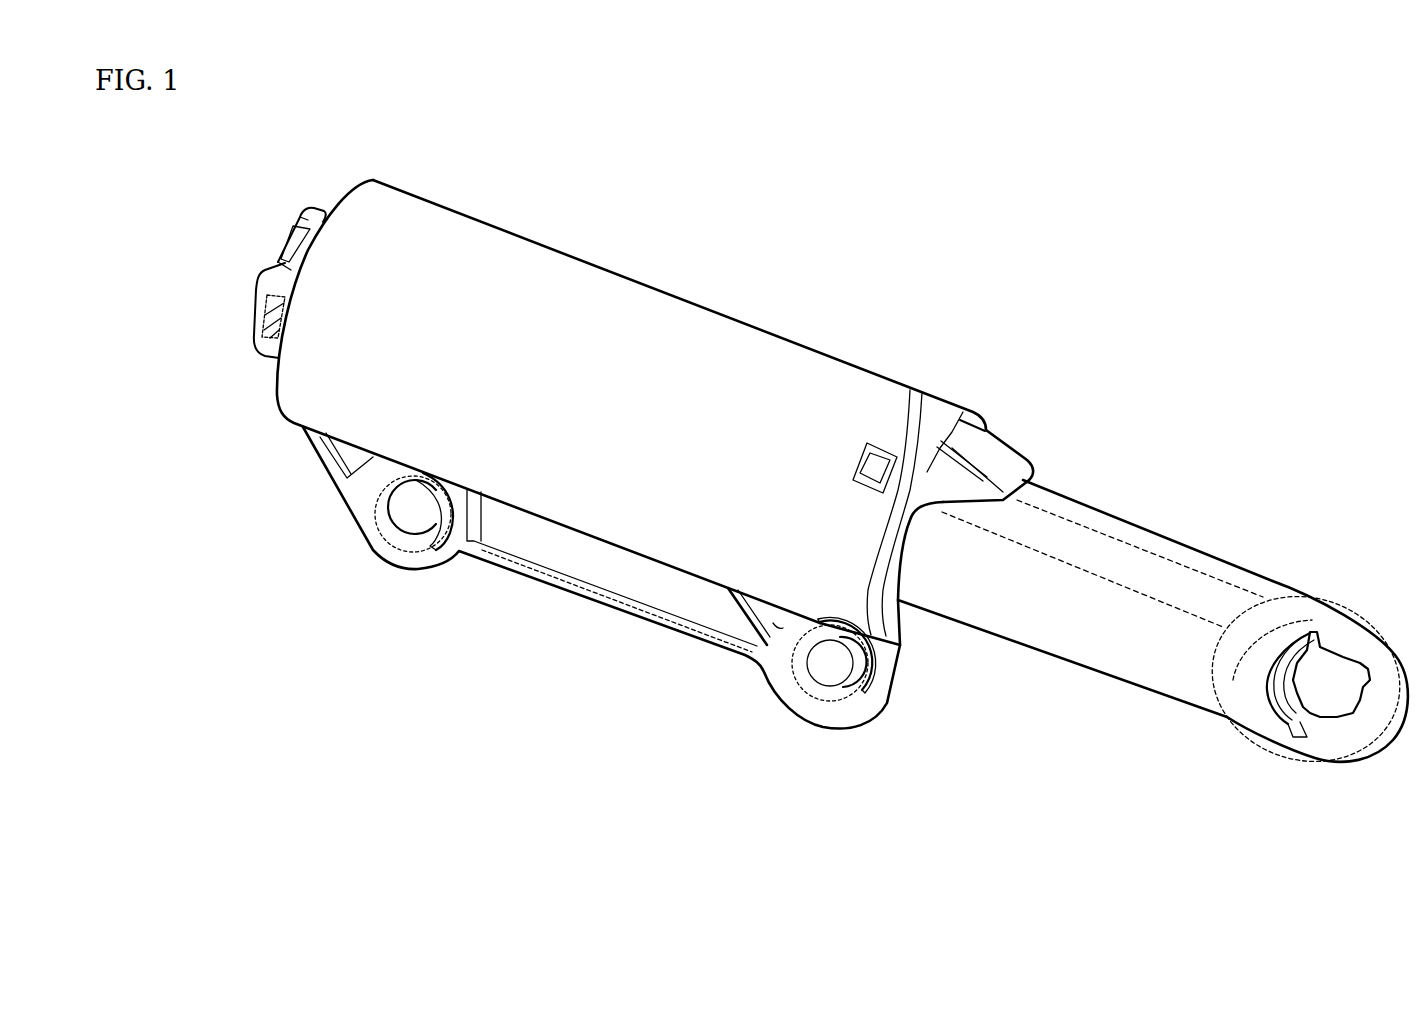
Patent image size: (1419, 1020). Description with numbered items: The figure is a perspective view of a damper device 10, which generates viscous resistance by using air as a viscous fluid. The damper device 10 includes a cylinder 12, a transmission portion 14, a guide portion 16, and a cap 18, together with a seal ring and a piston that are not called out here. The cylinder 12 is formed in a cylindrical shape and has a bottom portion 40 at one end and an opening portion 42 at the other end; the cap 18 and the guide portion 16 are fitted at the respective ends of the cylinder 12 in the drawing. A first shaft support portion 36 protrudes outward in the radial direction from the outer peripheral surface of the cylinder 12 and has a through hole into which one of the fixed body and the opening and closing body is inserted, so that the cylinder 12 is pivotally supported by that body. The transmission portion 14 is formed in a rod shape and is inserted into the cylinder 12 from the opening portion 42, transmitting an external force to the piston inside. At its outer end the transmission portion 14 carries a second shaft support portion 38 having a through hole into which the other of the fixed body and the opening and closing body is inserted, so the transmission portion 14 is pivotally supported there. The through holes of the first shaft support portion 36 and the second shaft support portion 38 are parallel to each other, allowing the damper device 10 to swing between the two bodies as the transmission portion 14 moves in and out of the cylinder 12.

The damper device 10 is at (668, 757).
The cylinder 12 is at (693, 340).
The transmission portion 14 is at (1147, 607).
The guide portion 16 is at (907, 480).
The cap 18 is at (283, 250).
The first shaft support portion 36 is at (403, 538).
The second shaft support portion 38 is at (1333, 647).
The bottom portion 40 is at (272, 379).
The opening portion 42 is at (907, 647).